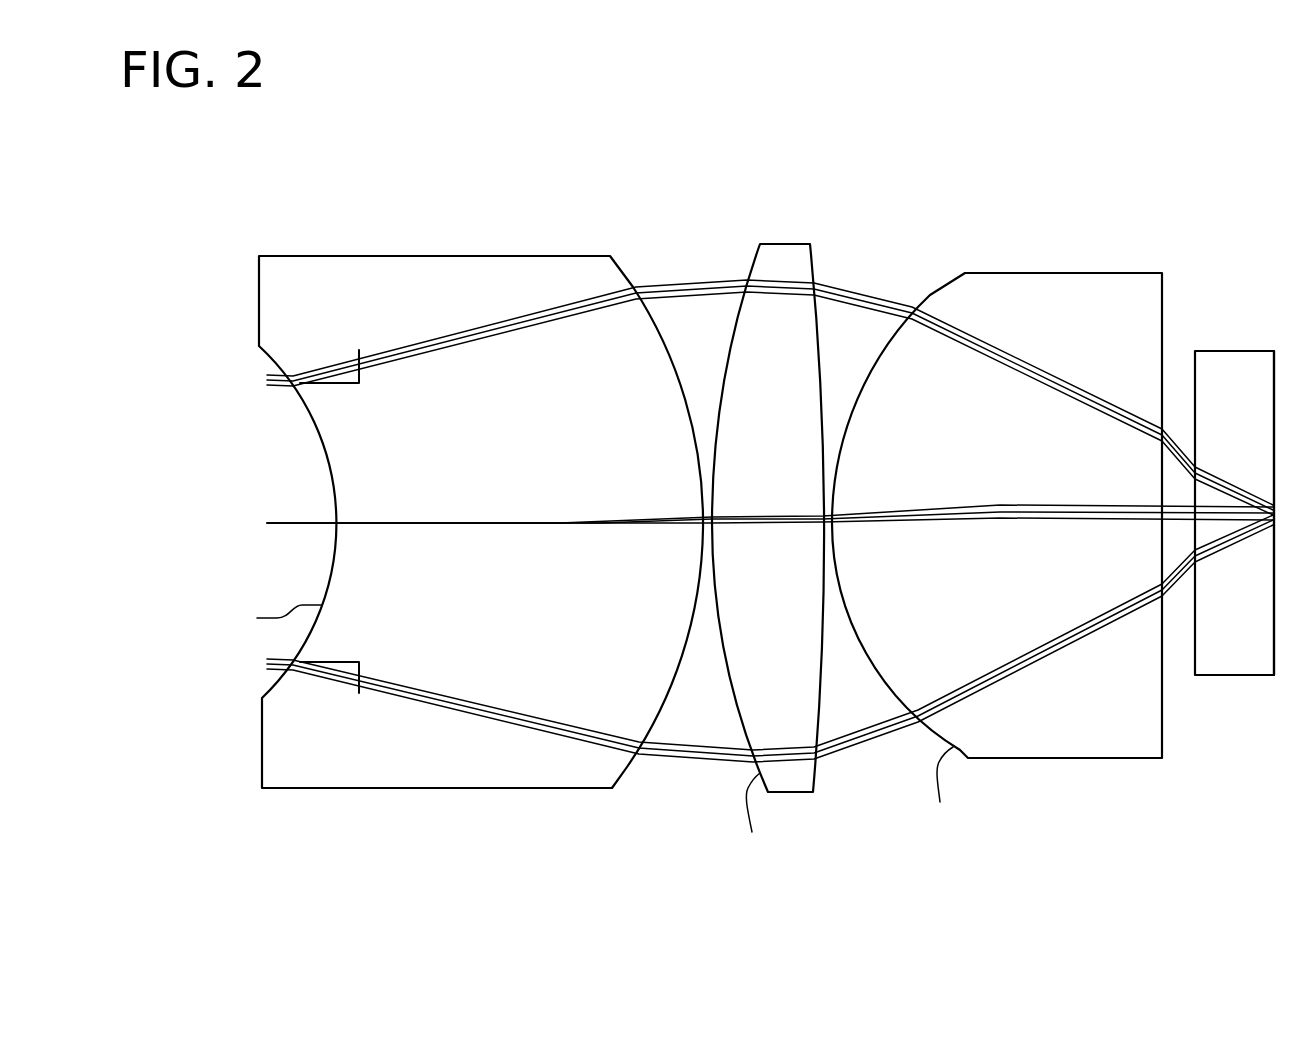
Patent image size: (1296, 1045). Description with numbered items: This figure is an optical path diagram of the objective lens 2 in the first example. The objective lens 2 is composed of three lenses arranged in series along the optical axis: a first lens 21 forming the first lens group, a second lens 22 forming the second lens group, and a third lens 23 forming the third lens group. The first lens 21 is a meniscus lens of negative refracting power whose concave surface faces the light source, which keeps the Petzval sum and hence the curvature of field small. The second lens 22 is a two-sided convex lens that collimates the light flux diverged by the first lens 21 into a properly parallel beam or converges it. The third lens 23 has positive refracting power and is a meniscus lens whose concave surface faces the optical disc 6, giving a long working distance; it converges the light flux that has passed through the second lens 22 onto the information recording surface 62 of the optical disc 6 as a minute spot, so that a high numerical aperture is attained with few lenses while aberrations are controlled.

The objective lens 2 is at (1113, 120).
The first lens 21 is at (432, 256).
The second lens 22 is at (781, 244).
The third lens 23 is at (1063, 273).
The optical disc 6 is at (1232, 351).
The information recording surface 62 is at (1274, 656).